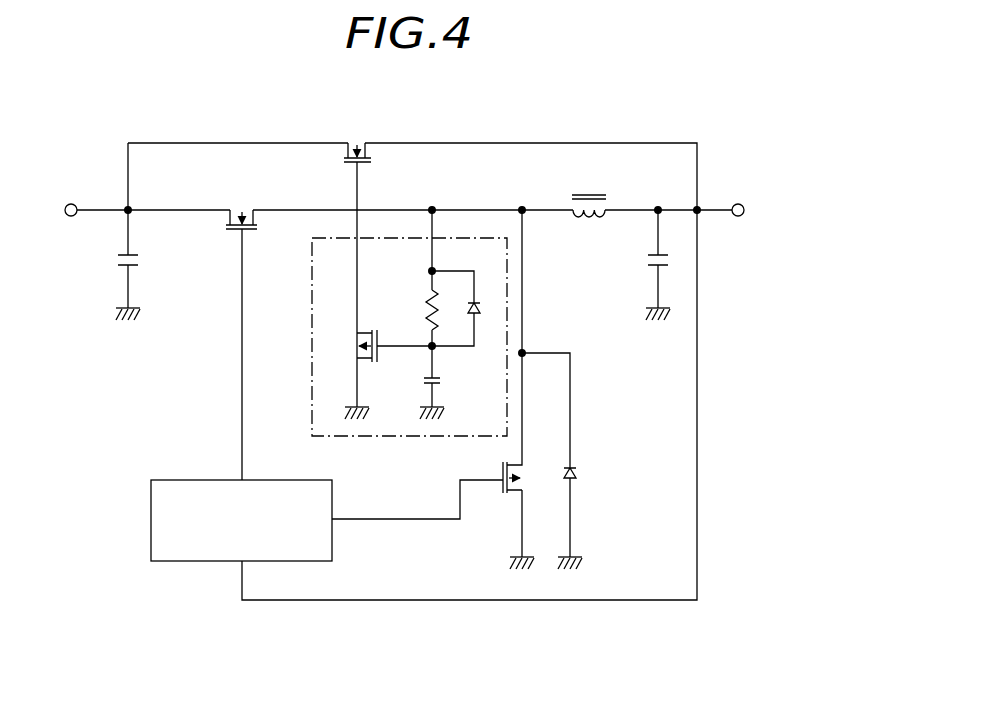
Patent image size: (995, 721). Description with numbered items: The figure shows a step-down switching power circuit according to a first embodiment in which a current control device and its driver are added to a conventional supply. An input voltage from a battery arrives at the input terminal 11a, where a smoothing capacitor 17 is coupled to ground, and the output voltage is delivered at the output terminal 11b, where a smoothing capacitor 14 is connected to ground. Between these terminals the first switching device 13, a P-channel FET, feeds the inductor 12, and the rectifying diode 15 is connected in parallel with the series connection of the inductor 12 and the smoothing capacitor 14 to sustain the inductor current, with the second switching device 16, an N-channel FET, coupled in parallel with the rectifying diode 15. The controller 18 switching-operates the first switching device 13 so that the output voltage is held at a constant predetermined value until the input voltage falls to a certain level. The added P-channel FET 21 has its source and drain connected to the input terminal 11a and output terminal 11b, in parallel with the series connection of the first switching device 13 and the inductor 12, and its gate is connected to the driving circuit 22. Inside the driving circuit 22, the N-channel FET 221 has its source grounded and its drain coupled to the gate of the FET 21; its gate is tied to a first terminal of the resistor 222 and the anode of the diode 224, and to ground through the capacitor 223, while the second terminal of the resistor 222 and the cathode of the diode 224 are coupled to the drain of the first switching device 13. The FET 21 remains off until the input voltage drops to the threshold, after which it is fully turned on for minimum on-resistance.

The input terminal 11a is at (67, 203).
The output terminal 11b is at (743, 203).
The inductor 12 is at (594, 194).
The first switching device 13 is at (232, 218).
The smoothing capacitor 14 is at (646, 259).
The rectifying diode 15 is at (578, 471).
The second switching device 16 is at (508, 493).
The smoothing capacitor 17 is at (115, 259).
The controller 18 is at (151, 521).
The P-channel FET 21 is at (370, 150).
The driving circuit 22 is at (311, 310).
The N-channel FET 221 is at (362, 359).
The resistor 222 is at (432, 300).
The capacitor 223 is at (425, 380).
The diode 224 is at (474, 315).